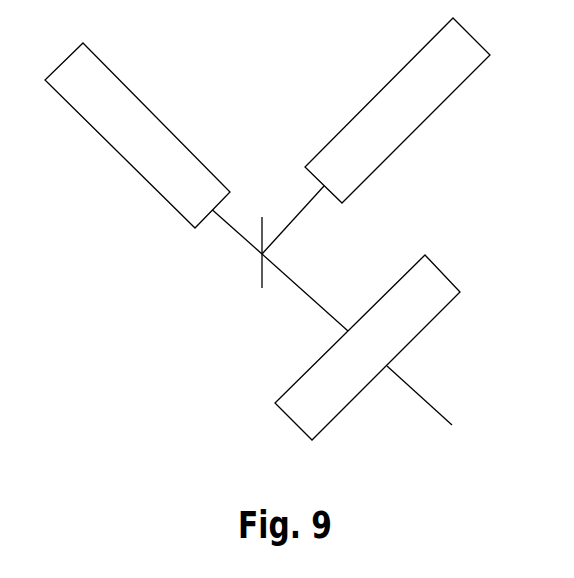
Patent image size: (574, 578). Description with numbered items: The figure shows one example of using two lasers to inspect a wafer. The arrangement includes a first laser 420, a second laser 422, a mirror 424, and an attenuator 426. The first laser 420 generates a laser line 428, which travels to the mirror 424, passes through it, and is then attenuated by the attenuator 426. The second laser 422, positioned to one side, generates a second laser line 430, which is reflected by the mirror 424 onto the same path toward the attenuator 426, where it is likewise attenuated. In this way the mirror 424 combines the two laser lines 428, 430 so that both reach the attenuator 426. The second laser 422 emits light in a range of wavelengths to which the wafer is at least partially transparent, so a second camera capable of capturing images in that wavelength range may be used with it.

The first laser 420 is at (137, 97).
The second laser 422 is at (387, 85).
The mirror 424 is at (266, 222).
The attenuator 426 is at (440, 270).
The laser line 428 is at (240, 235).
The laser line 430 is at (297, 218).